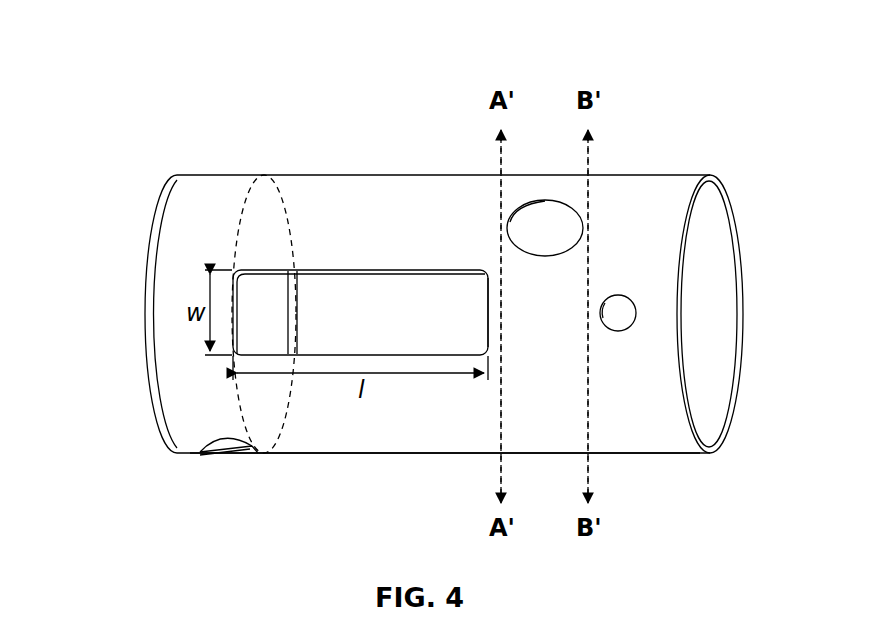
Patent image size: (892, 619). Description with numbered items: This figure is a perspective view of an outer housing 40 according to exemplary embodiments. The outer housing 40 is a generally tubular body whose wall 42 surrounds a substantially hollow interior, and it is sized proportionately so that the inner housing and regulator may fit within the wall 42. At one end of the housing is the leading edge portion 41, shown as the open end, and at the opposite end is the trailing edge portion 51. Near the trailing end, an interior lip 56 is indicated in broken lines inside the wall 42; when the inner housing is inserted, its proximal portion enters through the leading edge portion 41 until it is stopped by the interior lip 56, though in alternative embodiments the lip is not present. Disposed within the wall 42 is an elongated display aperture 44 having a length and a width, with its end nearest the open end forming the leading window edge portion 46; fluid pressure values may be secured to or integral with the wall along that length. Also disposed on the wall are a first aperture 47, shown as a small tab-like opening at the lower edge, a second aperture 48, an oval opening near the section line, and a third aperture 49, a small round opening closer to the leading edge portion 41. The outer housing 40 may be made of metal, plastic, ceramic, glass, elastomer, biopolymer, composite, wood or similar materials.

The outer housing 40 is at (160, 52).
The leading edge portion 41 is at (710, 453).
The wall 42 is at (320, 440).
The display aperture 44 is at (322, 303).
The leading window edge portion 46 is at (485, 305).
The first aperture 47 is at (232, 464).
The second aperture 48 is at (536, 222).
The third aperture 49 is at (622, 315).
The trailing edge portion 51 is at (175, 453).
The interior lip 56 is at (242, 211).